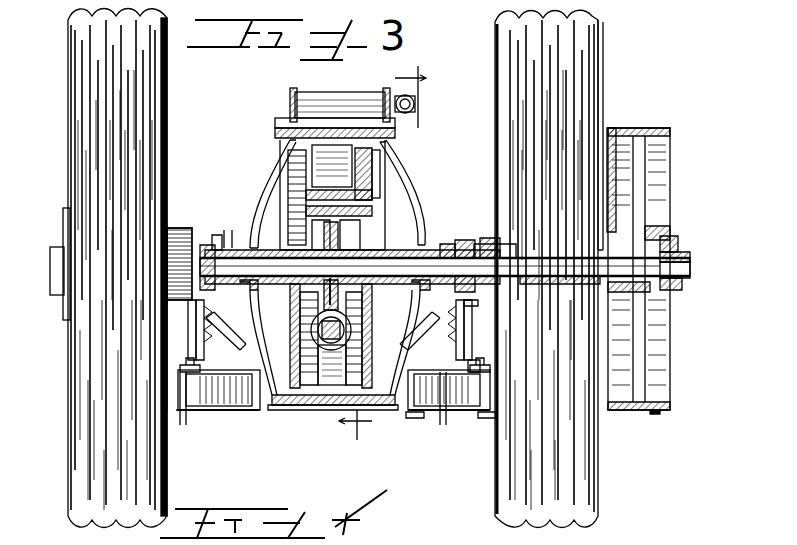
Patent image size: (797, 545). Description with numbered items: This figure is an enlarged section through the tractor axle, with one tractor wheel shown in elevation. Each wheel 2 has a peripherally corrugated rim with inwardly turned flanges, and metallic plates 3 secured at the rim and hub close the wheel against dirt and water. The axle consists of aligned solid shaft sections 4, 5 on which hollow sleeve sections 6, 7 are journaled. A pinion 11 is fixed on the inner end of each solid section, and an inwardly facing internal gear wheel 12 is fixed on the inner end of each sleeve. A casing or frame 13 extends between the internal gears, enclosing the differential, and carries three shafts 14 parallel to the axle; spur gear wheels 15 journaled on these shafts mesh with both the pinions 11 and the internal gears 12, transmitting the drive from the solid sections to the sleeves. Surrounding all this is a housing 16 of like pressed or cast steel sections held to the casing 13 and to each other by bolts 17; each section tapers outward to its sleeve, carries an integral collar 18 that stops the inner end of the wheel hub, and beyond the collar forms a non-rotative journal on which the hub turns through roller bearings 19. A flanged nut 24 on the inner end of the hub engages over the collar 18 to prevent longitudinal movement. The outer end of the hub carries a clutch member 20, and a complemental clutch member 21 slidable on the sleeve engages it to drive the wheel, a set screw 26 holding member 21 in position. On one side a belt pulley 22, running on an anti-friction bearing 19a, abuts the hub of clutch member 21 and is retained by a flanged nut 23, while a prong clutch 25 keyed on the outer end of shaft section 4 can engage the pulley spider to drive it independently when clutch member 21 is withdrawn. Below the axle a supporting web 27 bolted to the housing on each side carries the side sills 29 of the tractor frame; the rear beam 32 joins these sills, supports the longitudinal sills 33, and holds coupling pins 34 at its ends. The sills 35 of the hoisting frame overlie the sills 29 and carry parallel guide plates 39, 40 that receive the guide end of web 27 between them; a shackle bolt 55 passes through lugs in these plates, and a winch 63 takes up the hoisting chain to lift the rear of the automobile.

The wheels 2 is at (82, 118).
The metallic plates 3 is at (592, 102).
The shaft section 4 is at (430, 250).
The shaft section 5 is at (222, 250).
The hollow shaft or sleeve section 6 is at (446, 244).
The hollow shaft or sleeve section 7 is at (234, 232).
The pinion 11 is at (375, 208).
The internal gear wheels 12 is at (285, 160).
The casing or frame 13 is at (330, 168).
The shafts 14 is at (382, 182).
The spur gear wheels 15 is at (388, 166).
The casing or housing 16 is at (268, 196).
The bolts 17 is at (294, 406).
The integral collars 18 is at (500, 240).
The roller bearings 19 is at (370, 306).
The anti-friction bearing 19a is at (672, 238).
The clutch member 20 is at (588, 200).
The complemental clutch member 21 is at (68, 232).
The belt pulley 22 is at (664, 408).
The flanged nut 23 is at (612, 290).
The flanged nut 24 is at (468, 250).
The prong clutch 25 is at (688, 258).
The set screw 26 is at (690, 276).
The supporting web 27 is at (466, 342).
The side sills 29 is at (196, 344).
The beam 32 is at (440, 405).
The longitudinal parallel sills 33 is at (258, 392).
The traction or coupling pins 34 is at (184, 420).
The sills 35 is at (218, 348).
The guide plate 39 is at (207, 318).
The guide plate 40 is at (195, 308).
The shackle bolt 55 is at (196, 262).
The winch 63 is at (352, 100).